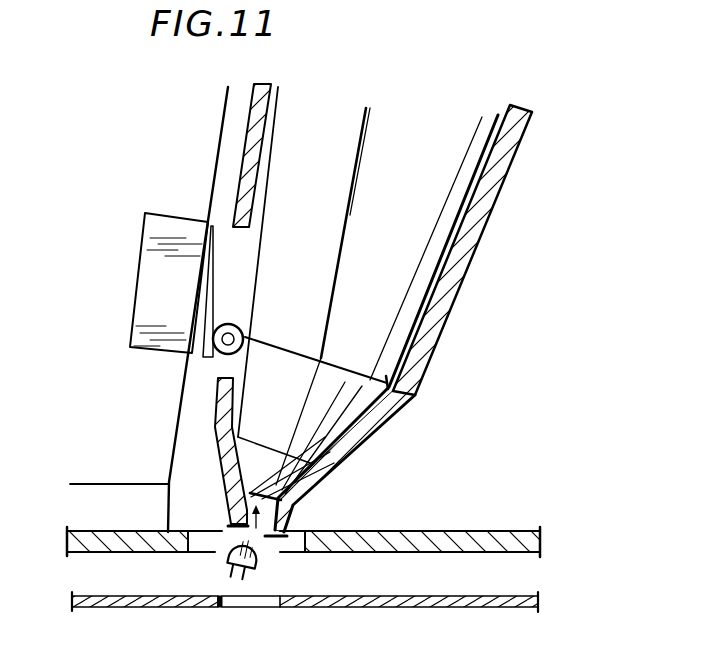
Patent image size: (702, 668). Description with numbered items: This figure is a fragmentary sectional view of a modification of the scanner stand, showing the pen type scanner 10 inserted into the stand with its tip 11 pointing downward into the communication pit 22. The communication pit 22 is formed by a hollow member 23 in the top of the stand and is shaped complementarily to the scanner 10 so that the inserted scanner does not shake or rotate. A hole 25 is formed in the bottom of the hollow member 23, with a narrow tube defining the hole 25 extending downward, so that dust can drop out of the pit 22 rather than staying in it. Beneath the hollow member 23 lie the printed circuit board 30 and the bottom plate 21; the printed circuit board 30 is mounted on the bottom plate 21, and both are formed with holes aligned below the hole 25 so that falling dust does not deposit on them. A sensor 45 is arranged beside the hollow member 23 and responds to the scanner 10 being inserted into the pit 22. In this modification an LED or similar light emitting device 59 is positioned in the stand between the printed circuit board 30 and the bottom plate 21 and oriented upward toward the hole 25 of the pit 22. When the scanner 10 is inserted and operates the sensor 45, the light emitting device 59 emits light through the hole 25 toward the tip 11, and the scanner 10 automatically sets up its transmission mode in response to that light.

The pen type scanner 10 is at (393, 287).
The tip 11 is at (313, 486).
The bottom plate 21 is at (427, 607).
The communication pit 22 is at (482, 171).
The hollow member 23 is at (473, 237).
The hole 25 is at (232, 513).
The printed circuit board 30 is at (437, 543).
The sensor 45 is at (148, 283).
The light emitting device 59 is at (262, 557).